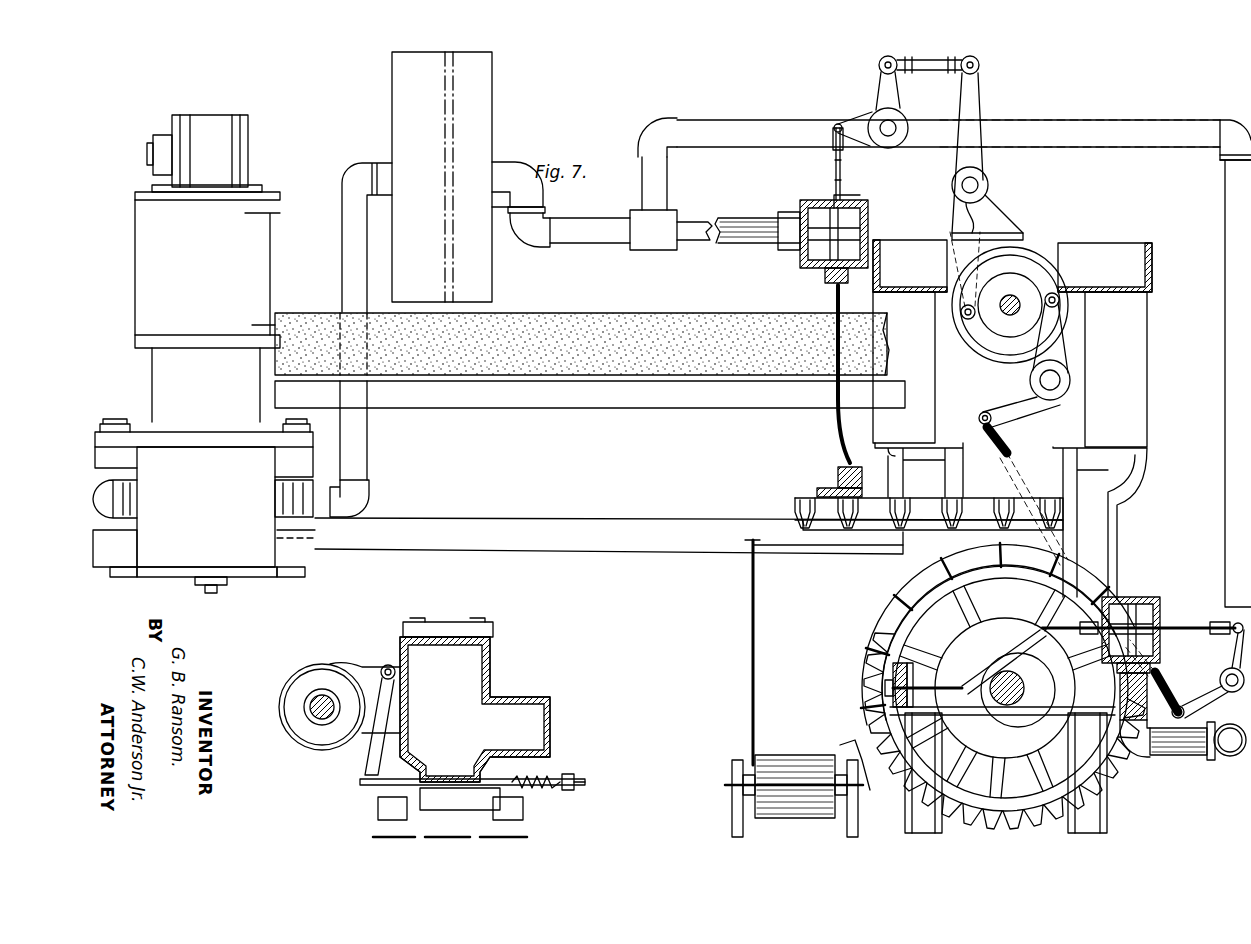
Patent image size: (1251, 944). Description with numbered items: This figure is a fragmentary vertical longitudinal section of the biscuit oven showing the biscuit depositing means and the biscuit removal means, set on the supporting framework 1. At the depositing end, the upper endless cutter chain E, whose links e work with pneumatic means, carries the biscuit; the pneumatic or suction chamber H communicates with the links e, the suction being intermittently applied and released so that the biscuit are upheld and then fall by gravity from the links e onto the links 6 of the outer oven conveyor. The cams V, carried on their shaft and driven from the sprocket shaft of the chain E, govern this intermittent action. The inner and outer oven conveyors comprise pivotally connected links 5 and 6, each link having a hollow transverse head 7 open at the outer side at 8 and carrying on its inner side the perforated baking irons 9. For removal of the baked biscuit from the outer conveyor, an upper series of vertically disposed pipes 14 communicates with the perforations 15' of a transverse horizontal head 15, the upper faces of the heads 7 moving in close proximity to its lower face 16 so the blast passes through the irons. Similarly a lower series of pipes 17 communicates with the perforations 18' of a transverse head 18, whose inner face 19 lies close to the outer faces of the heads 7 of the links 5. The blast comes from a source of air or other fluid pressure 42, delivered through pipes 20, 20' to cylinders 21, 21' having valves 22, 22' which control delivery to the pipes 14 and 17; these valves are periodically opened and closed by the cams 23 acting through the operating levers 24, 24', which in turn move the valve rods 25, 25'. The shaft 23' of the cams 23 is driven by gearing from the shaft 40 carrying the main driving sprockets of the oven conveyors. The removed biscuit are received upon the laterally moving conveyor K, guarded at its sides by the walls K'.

The source of air or other fluid pressure 42 is at (203, 354).
The pipe 20 is at (757, 215).
The cylinder 21 is at (827, 189).
The valve 22 is at (852, 241).
The operating lever 24 is at (1027, 148).
The valve rod 25 is at (856, 164).
The cam 23 is at (1009, 291).
The cam shaft 23' is at (1065, 278).
The operating lever 24' is at (1111, 510).
The vertically disposed pipes 14 is at (837, 429).
The outer side opening of head 8 is at (832, 490).
The hollow transverse head 7 is at (802, 497).
The links of outer oven conveyor 6 is at (795, 498).
The transverse horizontal head 15 is at (886, 479).
The perforations of head 15' is at (857, 482).
The lower face of head 16 is at (882, 497).
The baking irons 9 is at (812, 530).
The links of inner oven conveyor 5 is at (905, 576).
The inner face of head 19 is at (908, 650).
The horizontal transverse head 18 is at (927, 665).
The perforations of head 18' is at (862, 688).
The lower horizontal series of pipes 17 is at (1034, 682).
The driving shaft 40 is at (1026, 690).
The valve 22' is at (1131, 622).
The cylinder 21' is at (1190, 612).
The valve rod 25' is at (1142, 639).
The pipe 20' is at (1183, 730).
The laterally moving conveyor K is at (794, 783).
The guard walls K' is at (806, 669).
The cams V is at (337, 662).
The supporting framework 1 is at (318, 702).
The pneumatic or suction chamber H is at (457, 700).
The links of chain E e is at (472, 797).
The upper endless cutter chain E is at (520, 805).